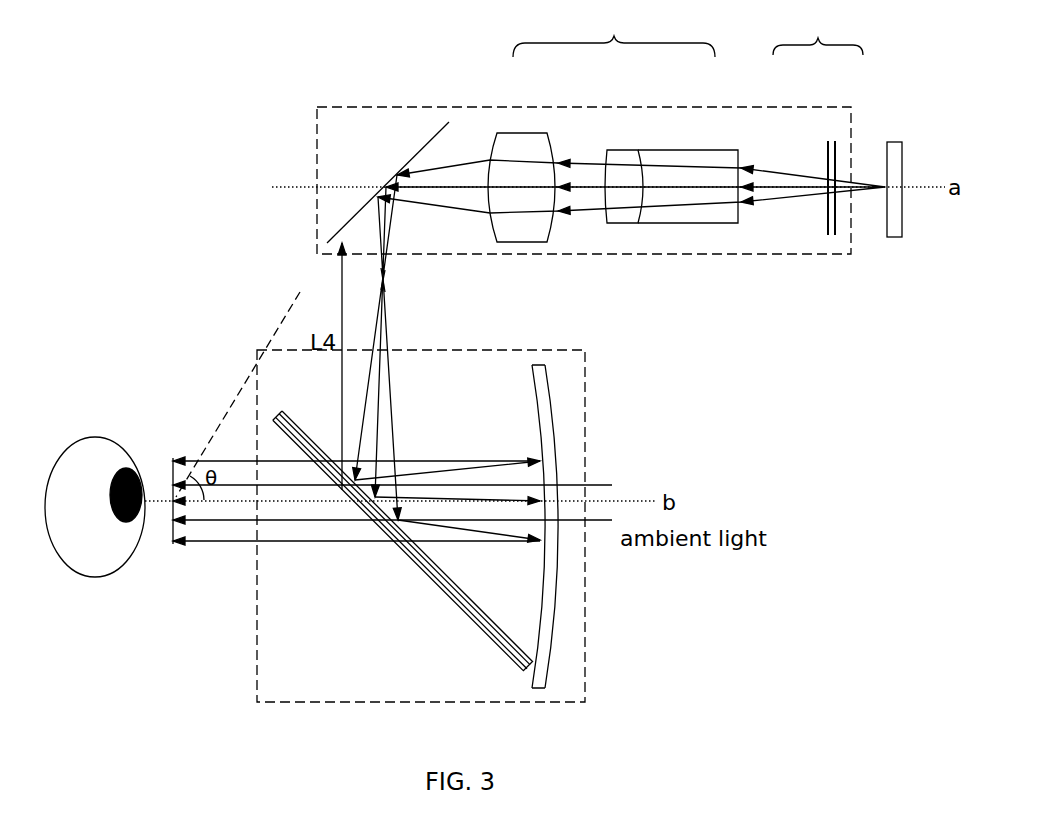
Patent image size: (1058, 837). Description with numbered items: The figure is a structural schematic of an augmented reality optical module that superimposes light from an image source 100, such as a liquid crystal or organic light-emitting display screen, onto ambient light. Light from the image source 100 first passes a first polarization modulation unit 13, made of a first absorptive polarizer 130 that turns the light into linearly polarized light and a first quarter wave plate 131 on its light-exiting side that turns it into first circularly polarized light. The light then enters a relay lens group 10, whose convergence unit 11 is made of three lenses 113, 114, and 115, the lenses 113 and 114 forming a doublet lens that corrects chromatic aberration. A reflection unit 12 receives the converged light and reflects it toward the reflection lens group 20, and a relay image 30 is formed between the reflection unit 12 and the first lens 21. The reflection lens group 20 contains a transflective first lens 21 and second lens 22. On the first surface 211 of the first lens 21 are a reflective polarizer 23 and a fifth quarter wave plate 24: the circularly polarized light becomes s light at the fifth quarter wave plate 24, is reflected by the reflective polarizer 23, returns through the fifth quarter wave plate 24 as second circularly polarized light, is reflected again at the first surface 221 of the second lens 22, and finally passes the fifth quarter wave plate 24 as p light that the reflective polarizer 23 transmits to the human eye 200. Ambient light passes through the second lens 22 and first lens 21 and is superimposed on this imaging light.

The relay lens group 10 is at (455, 107).
The convergence unit 11 is at (614, 33).
The lens 113 is at (688, 150).
The lens 114 is at (613, 150).
The lens 115 is at (533, 133).
The reflection unit 12 is at (327, 243).
The first polarization modulation unit 13 is at (818, 31).
The first absorptive polarizer 130 is at (835, 141).
The first quarter wave plate 131 is at (828, 141).
The image source 100 is at (892, 142).
The relay image 30 is at (403, 281).
The reflection lens group 20 is at (258, 394).
The first lens 21 is at (359, 518).
The first surface of the first lens 211 is at (290, 419).
The reflective polarizer 23 is at (455, 582).
The fifth quarter wave plate 24 is at (485, 607).
The second lens 22 is at (544, 526).
The first surface of the second lens 221 is at (536, 430).
The human eye 200 is at (95, 437).